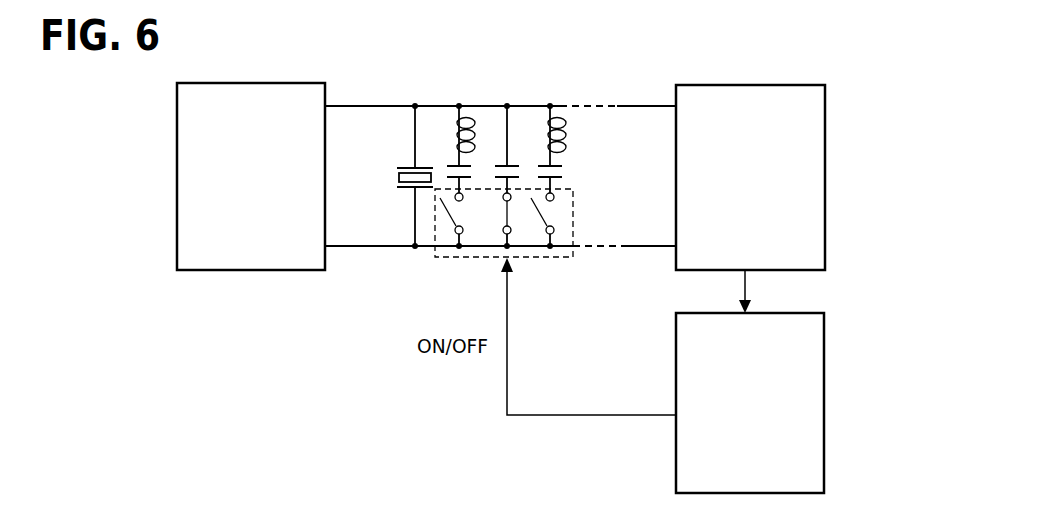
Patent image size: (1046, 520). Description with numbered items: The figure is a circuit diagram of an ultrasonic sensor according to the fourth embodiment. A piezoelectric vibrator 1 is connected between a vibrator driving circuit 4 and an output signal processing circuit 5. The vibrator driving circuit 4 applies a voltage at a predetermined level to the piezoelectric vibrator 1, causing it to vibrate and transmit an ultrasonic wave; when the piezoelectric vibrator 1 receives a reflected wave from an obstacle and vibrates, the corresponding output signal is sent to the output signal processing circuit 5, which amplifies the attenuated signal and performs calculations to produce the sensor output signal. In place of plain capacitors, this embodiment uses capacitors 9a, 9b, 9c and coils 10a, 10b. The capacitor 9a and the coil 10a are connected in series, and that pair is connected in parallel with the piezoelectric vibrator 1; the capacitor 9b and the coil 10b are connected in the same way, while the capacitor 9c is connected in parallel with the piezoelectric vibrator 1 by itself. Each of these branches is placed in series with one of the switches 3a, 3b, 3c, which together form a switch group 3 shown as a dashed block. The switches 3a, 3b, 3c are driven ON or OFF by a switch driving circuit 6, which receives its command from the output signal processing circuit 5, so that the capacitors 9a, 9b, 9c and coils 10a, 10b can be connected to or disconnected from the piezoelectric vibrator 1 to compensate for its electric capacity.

The piezoelectric vibrator 1 is at (400, 167).
The switches 3 is at (558, 258).
The switch 3a is at (453, 222).
The switch 3b is at (502, 217).
The switch 3c is at (545, 218).
The vibrator driving circuit 4 is at (232, 270).
The output signal processing circuit 5 is at (826, 166).
The switch driving circuit 6 is at (826, 388).
The capacitor 9a is at (471, 166).
The capacitor 9b is at (563, 166).
The capacitor 9c is at (519, 166).
The coil 10a is at (457, 114).
The coil 10b is at (553, 116).